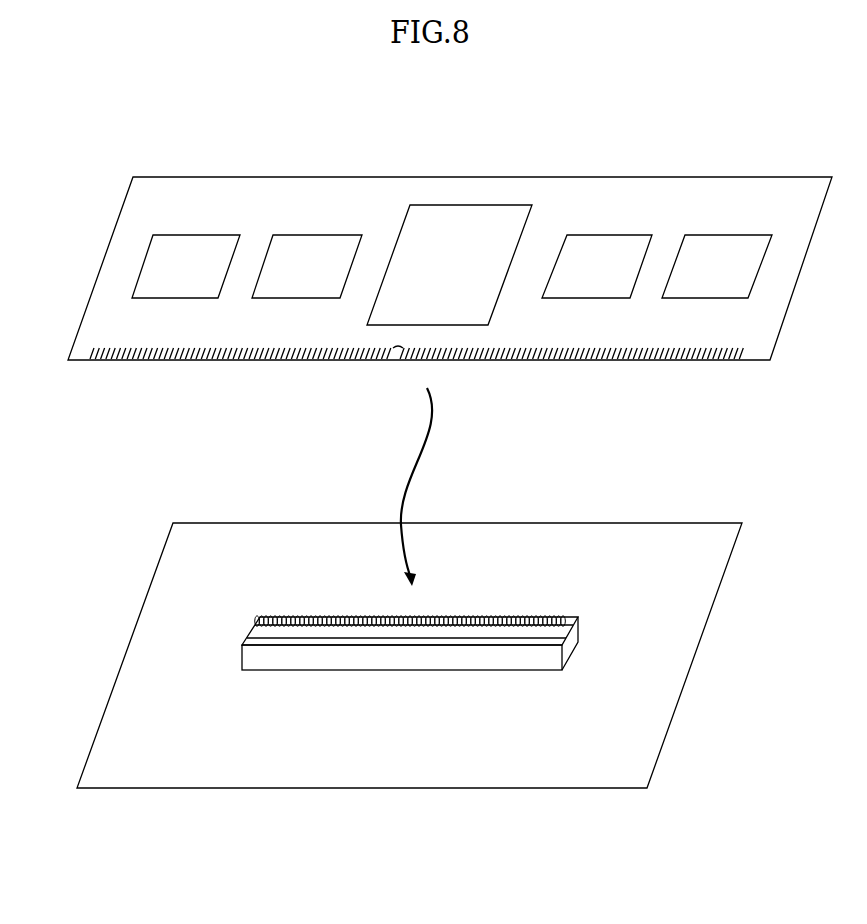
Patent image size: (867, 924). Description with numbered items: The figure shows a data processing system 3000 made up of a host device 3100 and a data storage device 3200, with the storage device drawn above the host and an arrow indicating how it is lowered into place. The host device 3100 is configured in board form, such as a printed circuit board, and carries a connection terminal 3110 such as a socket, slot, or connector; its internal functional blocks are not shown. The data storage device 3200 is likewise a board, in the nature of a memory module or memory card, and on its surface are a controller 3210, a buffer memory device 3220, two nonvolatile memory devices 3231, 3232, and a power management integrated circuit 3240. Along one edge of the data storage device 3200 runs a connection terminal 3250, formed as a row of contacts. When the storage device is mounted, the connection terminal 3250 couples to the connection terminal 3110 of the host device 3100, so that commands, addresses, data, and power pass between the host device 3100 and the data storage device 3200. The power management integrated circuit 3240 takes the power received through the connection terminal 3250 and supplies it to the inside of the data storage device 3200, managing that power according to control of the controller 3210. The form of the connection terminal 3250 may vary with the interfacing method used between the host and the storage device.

The data processing system 3000 is at (108, 136).
The host device 3100 is at (409, 655).
The connection terminal 3110 is at (579, 620).
The data storage device 3200 is at (450, 294).
The controller 3210 is at (449, 265).
The buffer memory device 3220 is at (307, 266).
The nonvolatile memory device 3231 is at (597, 266).
The nonvolatile memory device 3232 is at (717, 266).
The power management integrated circuit 3240 is at (186, 266).
The connection terminal 3250 is at (117, 360).